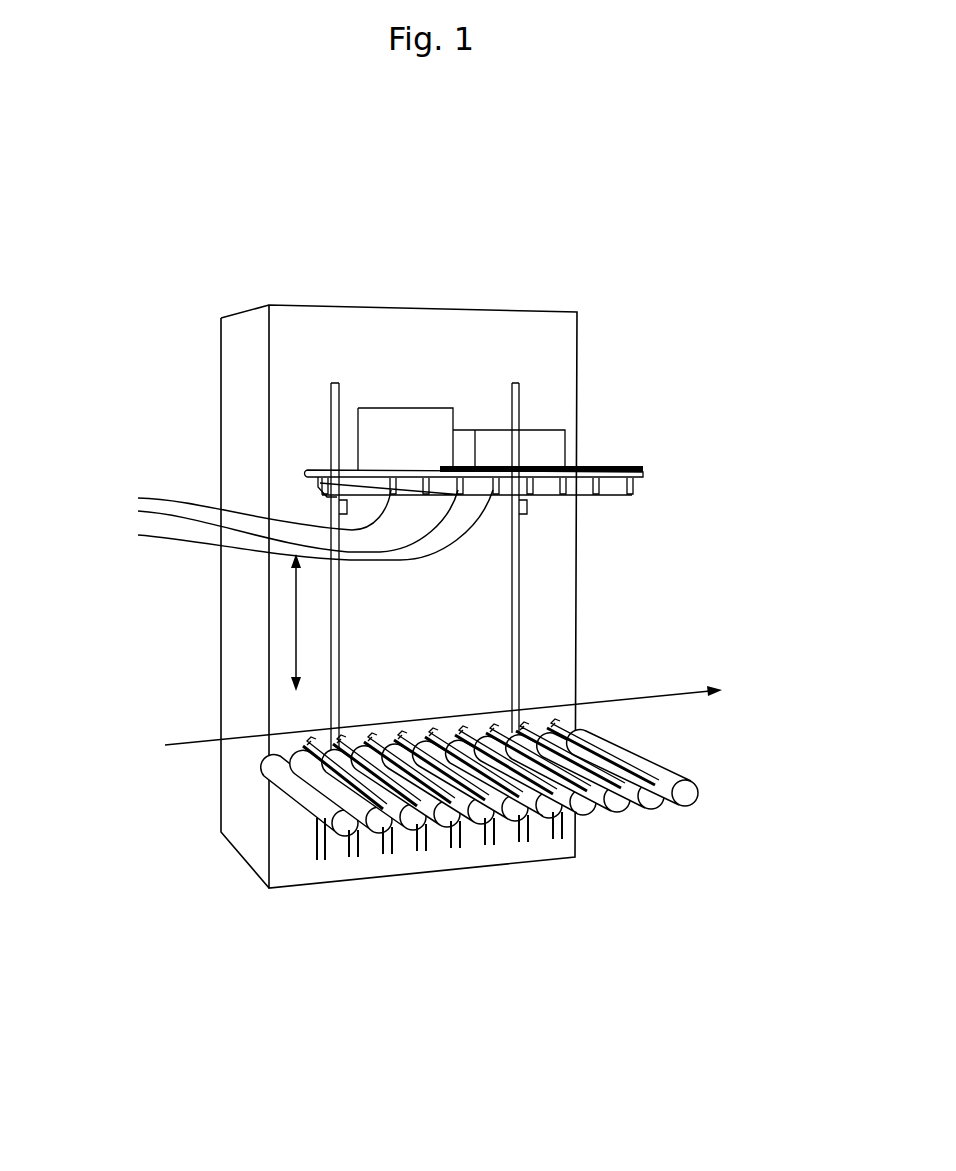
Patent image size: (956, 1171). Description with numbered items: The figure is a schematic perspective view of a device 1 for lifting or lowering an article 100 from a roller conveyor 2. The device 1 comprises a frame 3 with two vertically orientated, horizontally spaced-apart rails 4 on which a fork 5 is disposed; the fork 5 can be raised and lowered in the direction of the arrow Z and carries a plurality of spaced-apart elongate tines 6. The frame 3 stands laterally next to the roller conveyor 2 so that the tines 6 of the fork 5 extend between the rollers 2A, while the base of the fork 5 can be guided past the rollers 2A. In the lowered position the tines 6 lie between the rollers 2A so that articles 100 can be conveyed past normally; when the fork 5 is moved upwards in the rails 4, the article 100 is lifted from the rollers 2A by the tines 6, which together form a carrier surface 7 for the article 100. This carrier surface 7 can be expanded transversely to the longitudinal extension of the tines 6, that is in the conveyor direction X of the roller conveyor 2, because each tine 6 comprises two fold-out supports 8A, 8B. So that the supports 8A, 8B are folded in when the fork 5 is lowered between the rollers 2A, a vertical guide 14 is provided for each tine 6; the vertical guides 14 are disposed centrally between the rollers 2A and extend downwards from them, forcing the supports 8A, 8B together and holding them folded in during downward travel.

The device 1 is at (252, 245).
The roller conveyor 2 is at (665, 750).
The rollers 2A is at (656, 800).
The frame 3 is at (593, 350).
The rails 4 is at (512, 608).
The fork 5 is at (655, 489).
The tines 6 is at (301, 525).
The carrier surface 7 is at (612, 460).
The fold-out support 8A is at (370, 476).
The fold-out support 8B is at (390, 470).
The vertical guide 14 is at (321, 872).
The article 100 is at (433, 460).
The conveyor direction X is at (462, 716).
The direction of raising and lowering Z is at (296, 622).